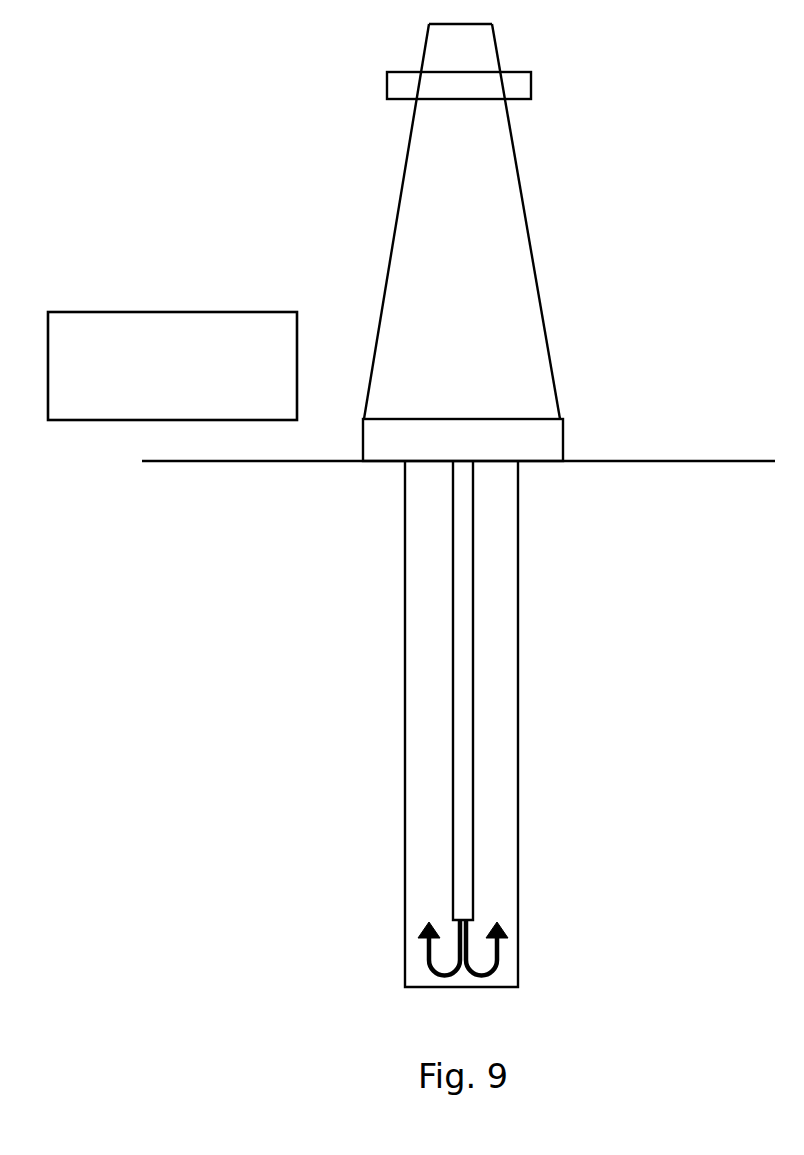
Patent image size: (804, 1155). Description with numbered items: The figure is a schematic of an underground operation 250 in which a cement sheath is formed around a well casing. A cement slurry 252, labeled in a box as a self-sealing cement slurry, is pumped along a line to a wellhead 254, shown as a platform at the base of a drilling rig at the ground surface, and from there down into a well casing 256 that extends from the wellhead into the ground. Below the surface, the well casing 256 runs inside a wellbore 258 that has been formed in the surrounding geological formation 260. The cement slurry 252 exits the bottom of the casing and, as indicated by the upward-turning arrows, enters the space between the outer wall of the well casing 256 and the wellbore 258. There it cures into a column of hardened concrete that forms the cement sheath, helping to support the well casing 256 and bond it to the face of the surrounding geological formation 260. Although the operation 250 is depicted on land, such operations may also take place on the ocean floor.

The underground operation 250 is at (622, 170).
The cement slurry 252 is at (463, 447).
The wellhead 254 is at (563, 440).
The well casing 256 is at (452, 619).
The wellbore 258 is at (405, 778).
The geological formation 260 is at (643, 716).